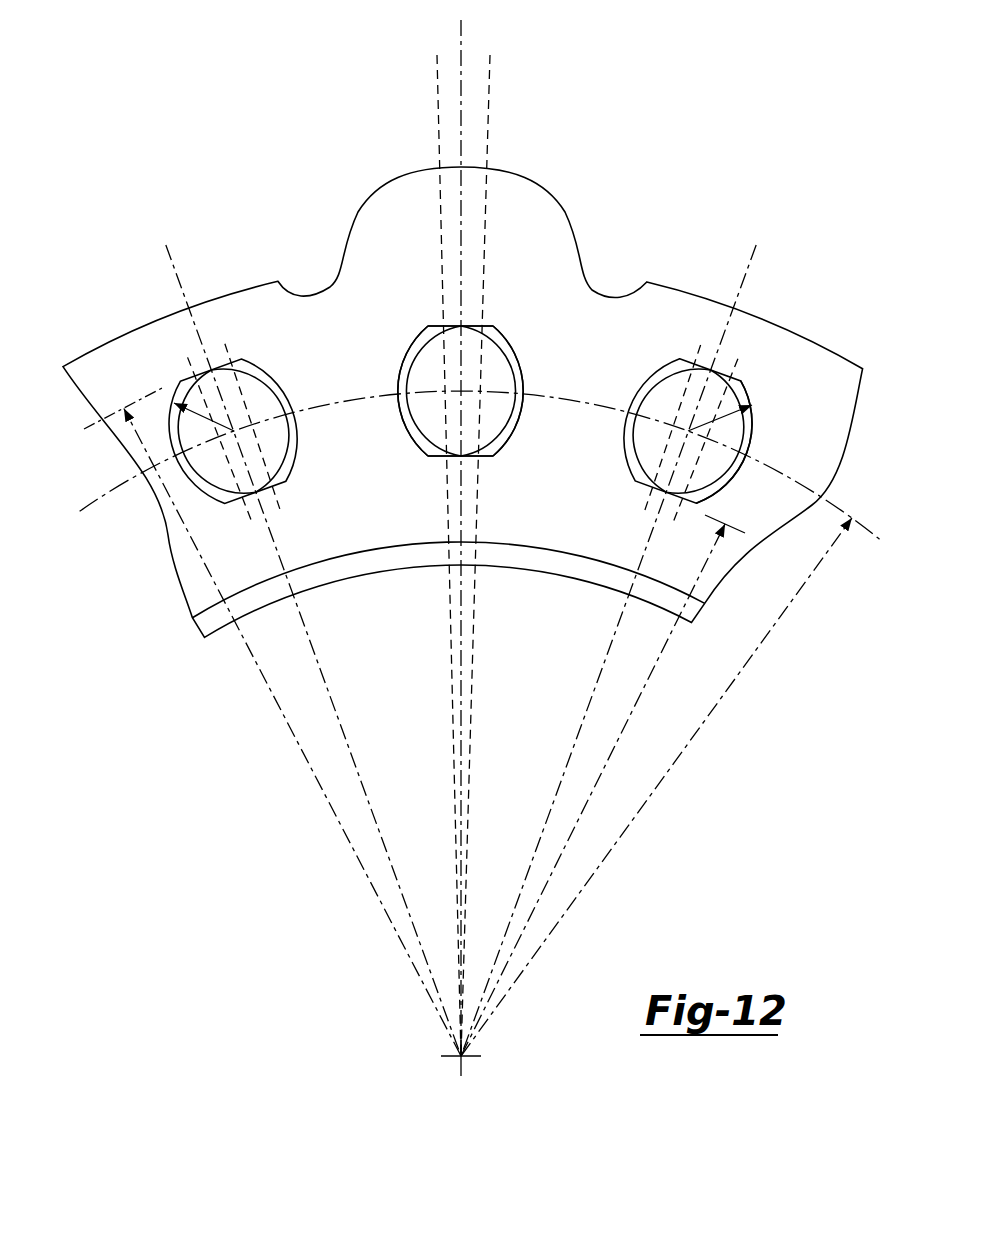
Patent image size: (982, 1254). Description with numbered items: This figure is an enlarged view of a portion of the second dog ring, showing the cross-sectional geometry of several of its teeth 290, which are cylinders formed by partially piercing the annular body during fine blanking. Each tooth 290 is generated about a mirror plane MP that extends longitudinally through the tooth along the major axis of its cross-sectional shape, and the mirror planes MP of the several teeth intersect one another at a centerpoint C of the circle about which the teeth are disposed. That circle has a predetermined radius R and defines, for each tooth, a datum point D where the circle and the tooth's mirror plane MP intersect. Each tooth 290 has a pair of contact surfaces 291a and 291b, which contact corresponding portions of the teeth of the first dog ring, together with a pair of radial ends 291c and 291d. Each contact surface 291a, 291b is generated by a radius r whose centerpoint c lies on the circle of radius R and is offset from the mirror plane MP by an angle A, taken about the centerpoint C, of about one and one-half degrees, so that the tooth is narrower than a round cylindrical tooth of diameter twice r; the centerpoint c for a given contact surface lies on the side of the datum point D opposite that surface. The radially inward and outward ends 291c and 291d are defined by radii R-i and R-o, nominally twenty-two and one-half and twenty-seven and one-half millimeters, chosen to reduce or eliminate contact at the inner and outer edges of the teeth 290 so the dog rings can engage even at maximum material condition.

The tooth 290 is at (755, 388).
The contact surface 291a is at (397, 392).
The contact surface 291b is at (527, 402).
The radial end 291c is at (486, 457).
The radial end 291d is at (470, 326).
The mirror plane MP is at (463, 42).
The angle A is at (460, 118).
The datum point D is at (461, 391).
The radius r is at (236, 360).
The centerpoint c is at (242, 424).
The radius R-o is at (320, 782).
The radius R-i is at (617, 745).
The radius R is at (647, 800).
The centerpoint C is at (463, 1058).